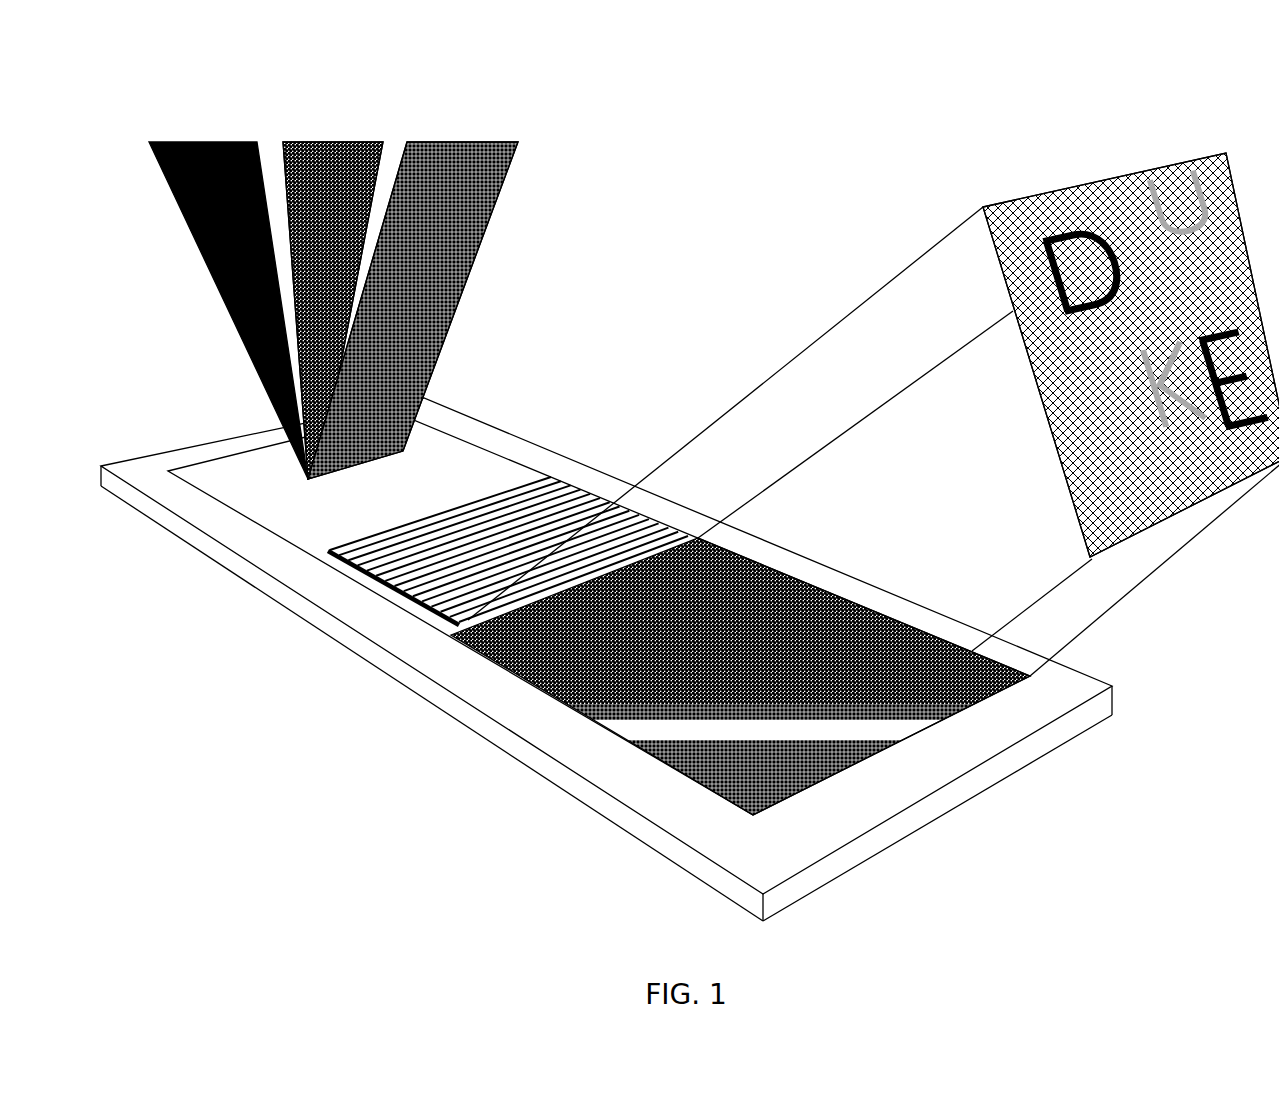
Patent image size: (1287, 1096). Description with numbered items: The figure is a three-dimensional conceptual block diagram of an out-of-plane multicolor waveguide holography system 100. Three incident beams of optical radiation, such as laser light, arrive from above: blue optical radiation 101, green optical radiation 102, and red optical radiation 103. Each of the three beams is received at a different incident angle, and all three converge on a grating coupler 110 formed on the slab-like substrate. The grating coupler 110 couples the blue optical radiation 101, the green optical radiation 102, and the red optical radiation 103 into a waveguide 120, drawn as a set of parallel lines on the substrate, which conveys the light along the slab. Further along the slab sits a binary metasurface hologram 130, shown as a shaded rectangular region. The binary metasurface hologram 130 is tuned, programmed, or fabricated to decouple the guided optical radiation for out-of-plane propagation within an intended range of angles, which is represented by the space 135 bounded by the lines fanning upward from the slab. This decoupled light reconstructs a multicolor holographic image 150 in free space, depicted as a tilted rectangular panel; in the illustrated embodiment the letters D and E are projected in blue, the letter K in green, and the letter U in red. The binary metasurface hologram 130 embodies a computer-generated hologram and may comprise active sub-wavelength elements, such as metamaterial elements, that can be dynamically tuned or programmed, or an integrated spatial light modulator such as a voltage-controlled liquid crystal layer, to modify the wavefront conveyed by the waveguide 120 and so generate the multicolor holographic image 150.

The out-of-plane multicolor waveguide holography system 100 is at (176, 810).
The blue optical radiation 101 is at (168, 195).
The green optical radiation 102 is at (307, 148).
The red optical radiation 103 is at (496, 179).
The grating coupler 110 is at (257, 497).
The waveguide 120 is at (384, 585).
The binary metasurface hologram 130 is at (590, 715).
The space 135 is at (913, 504).
The multicolor holographic image 150 is at (1076, 166).